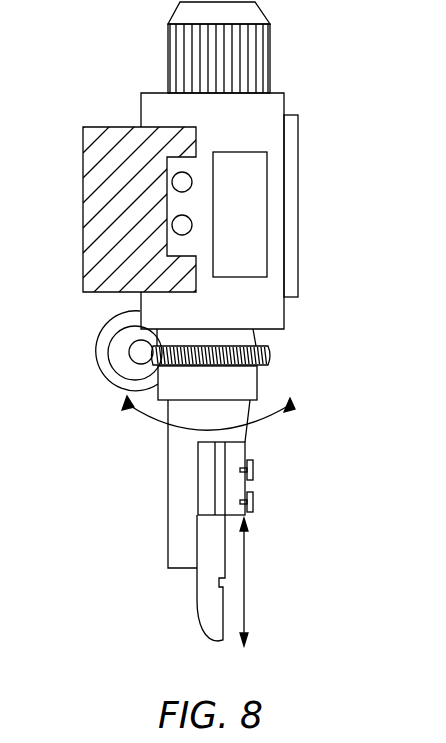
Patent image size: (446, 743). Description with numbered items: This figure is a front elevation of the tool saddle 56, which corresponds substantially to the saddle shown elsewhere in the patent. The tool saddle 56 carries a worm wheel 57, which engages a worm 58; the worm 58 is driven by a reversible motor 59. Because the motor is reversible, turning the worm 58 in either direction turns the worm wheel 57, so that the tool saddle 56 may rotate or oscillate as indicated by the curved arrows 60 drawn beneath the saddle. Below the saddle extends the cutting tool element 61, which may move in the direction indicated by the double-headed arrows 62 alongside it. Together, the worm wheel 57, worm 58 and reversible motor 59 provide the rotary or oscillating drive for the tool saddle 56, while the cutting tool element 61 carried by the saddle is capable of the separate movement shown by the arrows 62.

The tool saddle 56 is at (273, 199).
The worm wheel 57 is at (268, 353).
The worm 58 is at (131, 362).
The reversible motor 59 is at (143, 353).
The arrows 60 is at (262, 422).
The cutting tool element 61 is at (203, 597).
The arrows 62 is at (244, 563).